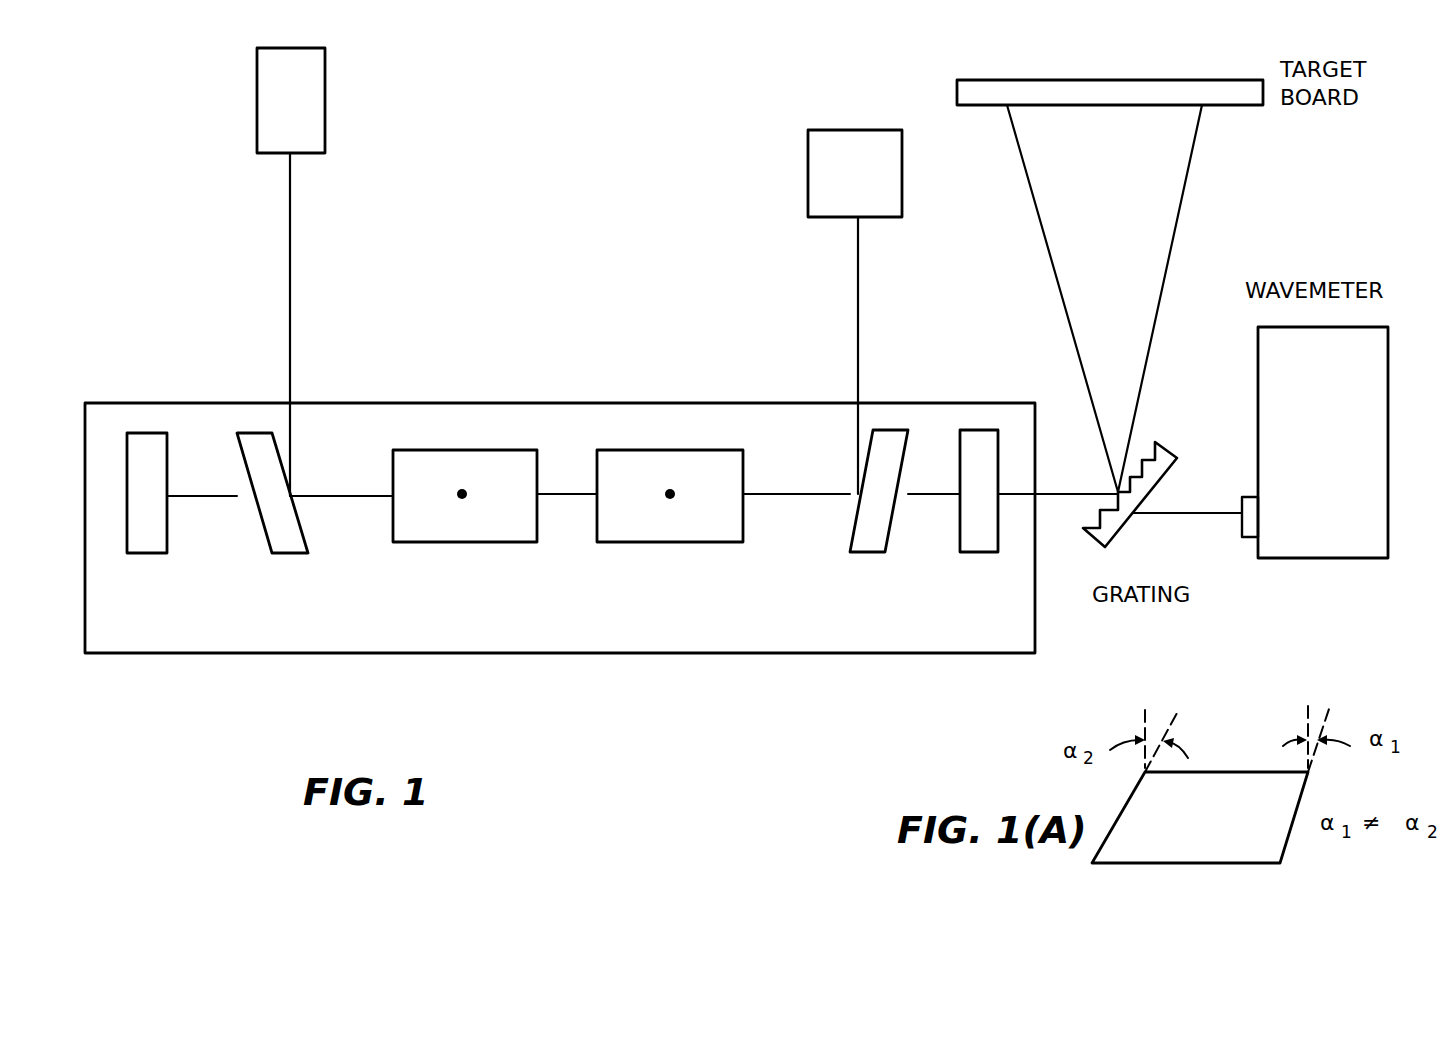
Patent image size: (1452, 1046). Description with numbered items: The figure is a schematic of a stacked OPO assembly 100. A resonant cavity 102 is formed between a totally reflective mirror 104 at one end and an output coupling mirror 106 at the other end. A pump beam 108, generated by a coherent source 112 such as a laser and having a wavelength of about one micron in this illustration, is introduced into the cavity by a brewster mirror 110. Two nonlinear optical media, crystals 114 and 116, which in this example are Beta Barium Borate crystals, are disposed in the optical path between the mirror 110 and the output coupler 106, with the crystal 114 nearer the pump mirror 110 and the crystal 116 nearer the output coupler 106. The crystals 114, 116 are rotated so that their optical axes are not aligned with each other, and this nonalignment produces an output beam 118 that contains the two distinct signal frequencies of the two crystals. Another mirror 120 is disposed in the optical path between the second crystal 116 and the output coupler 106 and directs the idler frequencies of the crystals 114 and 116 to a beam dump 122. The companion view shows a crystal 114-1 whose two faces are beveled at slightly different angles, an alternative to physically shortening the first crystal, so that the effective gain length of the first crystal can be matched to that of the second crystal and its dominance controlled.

In FIG. 1, the stacked OPO assembly 100 is at (557, 262).
In FIG. 1, the resonant cavity 102 is at (575, 403).
In FIG. 1, the totally reflective mirror 104 is at (147, 433).
In FIG. 1, the output coupling mirror 106 is at (983, 552).
In FIG. 1, the pump beam 108 is at (290, 278).
In FIG. 1, the brewster mirror 110 is at (252, 433).
In FIG. 1, the coherent source 112 is at (325, 88).
In FIG. 1, the crystal 114 is at (452, 450).
In FIG. 1, the crystal 116 is at (676, 450).
In FIG. 1, the output beam 118 is at (1072, 494).
In FIG. 1, the mirror 120 is at (890, 430).
In FIG. 1, the beam dump 122 is at (902, 182).
The crystal with non-parallel faces 114-1 is at (1180, 865).